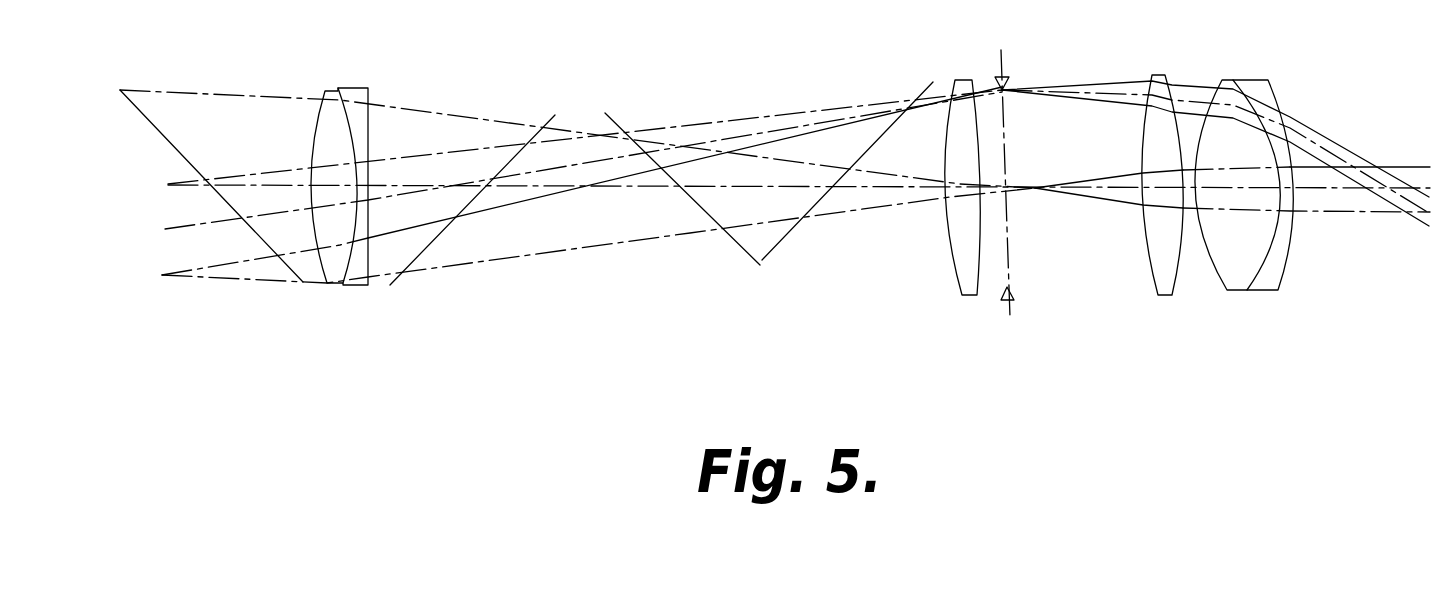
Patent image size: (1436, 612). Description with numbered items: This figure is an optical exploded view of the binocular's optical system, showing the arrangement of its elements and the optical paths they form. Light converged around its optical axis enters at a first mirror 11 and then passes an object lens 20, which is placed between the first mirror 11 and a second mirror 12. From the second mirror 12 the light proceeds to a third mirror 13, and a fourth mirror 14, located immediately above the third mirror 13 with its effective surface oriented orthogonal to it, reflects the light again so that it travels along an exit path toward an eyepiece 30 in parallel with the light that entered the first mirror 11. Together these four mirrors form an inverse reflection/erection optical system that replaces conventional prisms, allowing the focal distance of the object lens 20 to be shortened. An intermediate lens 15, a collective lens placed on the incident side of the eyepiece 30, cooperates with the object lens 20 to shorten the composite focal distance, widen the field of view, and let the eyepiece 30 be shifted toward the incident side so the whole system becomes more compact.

The first mirror 11 is at (155, 122).
The second mirror 12 is at (434, 240).
The third mirror 13 is at (740, 243).
The fourth mirror 14 is at (887, 130).
The intermediate lens 15 is at (947, 248).
The object lens 20 is at (352, 89).
The eyepiece 30 is at (1246, 303).